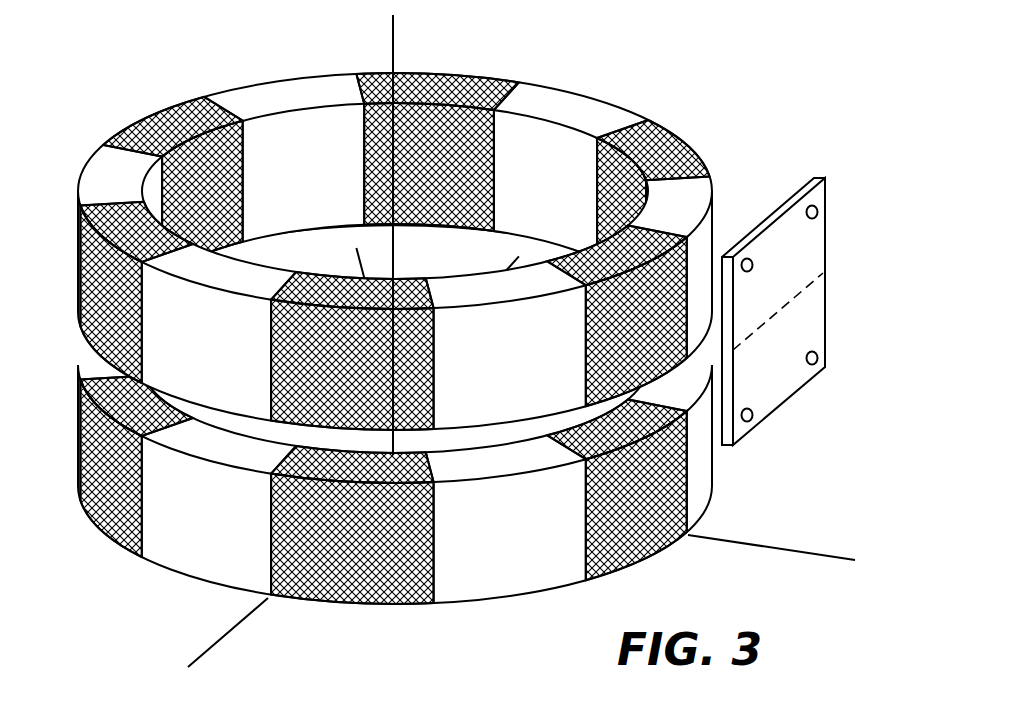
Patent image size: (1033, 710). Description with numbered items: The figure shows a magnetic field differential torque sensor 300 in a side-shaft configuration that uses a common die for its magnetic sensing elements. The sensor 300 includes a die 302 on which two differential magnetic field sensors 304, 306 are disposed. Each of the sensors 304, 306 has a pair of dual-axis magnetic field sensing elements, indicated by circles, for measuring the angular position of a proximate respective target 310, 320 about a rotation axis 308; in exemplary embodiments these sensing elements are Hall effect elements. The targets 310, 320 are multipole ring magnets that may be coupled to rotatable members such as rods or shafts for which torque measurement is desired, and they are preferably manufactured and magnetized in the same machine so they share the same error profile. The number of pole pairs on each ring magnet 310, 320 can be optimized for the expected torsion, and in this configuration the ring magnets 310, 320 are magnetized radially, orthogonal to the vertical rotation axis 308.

The magnetic field differential torque sensor 300 is at (161, 66).
The die 302 is at (826, 178).
The differential magnetic field sensor 304 is at (777, 282).
The differential magnetic field sensor 306 is at (778, 365).
The rotation axis 308 is at (393, 47).
The target 310 is at (103, 172).
The target 320 is at (108, 520).